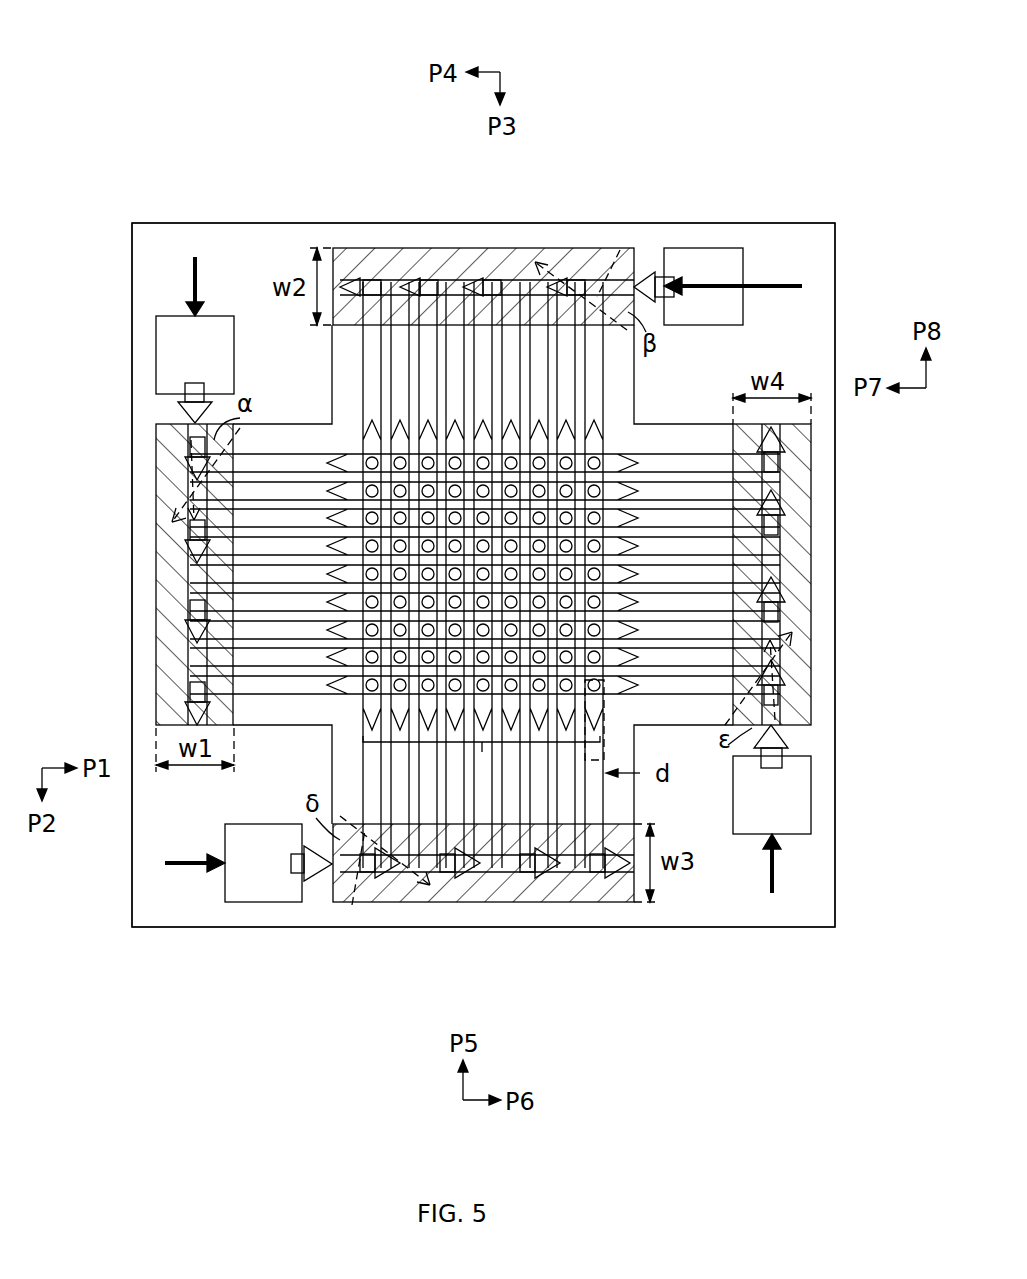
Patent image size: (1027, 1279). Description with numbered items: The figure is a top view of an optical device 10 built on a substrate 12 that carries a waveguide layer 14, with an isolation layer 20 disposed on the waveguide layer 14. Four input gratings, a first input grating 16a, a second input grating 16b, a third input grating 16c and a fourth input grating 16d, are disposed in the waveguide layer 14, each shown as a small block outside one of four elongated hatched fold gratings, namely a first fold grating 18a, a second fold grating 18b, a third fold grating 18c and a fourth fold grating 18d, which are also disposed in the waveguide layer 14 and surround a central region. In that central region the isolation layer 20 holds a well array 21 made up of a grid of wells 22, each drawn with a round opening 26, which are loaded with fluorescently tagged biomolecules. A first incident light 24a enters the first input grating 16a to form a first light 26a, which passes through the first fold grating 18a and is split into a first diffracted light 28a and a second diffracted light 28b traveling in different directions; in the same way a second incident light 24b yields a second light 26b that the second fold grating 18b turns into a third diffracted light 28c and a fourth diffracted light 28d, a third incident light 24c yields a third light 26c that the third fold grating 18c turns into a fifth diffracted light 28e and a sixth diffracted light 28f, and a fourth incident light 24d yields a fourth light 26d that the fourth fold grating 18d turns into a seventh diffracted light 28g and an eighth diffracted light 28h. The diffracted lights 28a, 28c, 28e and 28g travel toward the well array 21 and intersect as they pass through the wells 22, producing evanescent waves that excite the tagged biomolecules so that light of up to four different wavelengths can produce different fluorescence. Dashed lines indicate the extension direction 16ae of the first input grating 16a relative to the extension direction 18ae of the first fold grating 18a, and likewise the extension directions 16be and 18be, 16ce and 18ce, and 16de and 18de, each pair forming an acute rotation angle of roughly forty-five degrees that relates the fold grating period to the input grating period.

The optical device 10 is at (92, 26).
The substrate 12 is at (483, 538).
The waveguide layer 14 is at (233, 223).
The first input grating 16a is at (216, 362).
The second input grating 16b is at (727, 301).
The third input grating 16c is at (283, 877).
The fourth input grating 16d is at (795, 811).
The extension direction of the first input grating 16ae is at (175, 447).
The extension direction of the second input grating 16be is at (620, 250).
The extension direction of the third input grating 16ce is at (352, 905).
The extension direction of the fourth input grating 16de is at (800, 710).
The first fold grating 18a is at (160, 588).
The second fold grating 18b is at (458, 248).
The third fold grating 18c is at (493, 902).
The fourth fold grating 18d is at (810, 566).
The extension direction of the first fold grating 18ae is at (172, 478).
The extension direction of the second fold grating 18be is at (588, 250).
The extension direction of the third fold grating 18ce is at (386, 903).
The extension direction of the fourth fold grating 18de is at (800, 675).
The isolation layer 20 is at (710, 423).
The well array 21 is at (481, 760).
The wells 22 is at (428, 484).
The first incident light 24a is at (190, 288).
The second incident light 24b is at (780, 282).
The third incident light 24c is at (188, 878).
The fourth incident light 24d is at (775, 870).
The opening 26 is at (610, 735).
The first light 26a is at (185, 402).
The second light 26b is at (655, 275).
The third light 26c is at (308, 882).
The fourth light 26d is at (790, 750).
The first diffracted light 28a is at (262, 450).
The second diffracted light 28b is at (188, 545).
The third diffracted light 28c is at (362, 360).
The fourth diffracted light 28d is at (380, 248).
The fifth diffracted light 28e is at (362, 768).
The sixth diffracted light 28f is at (452, 902).
The seventh diffracted light 28g is at (705, 455).
The eighth diffracted light 28h is at (790, 463).